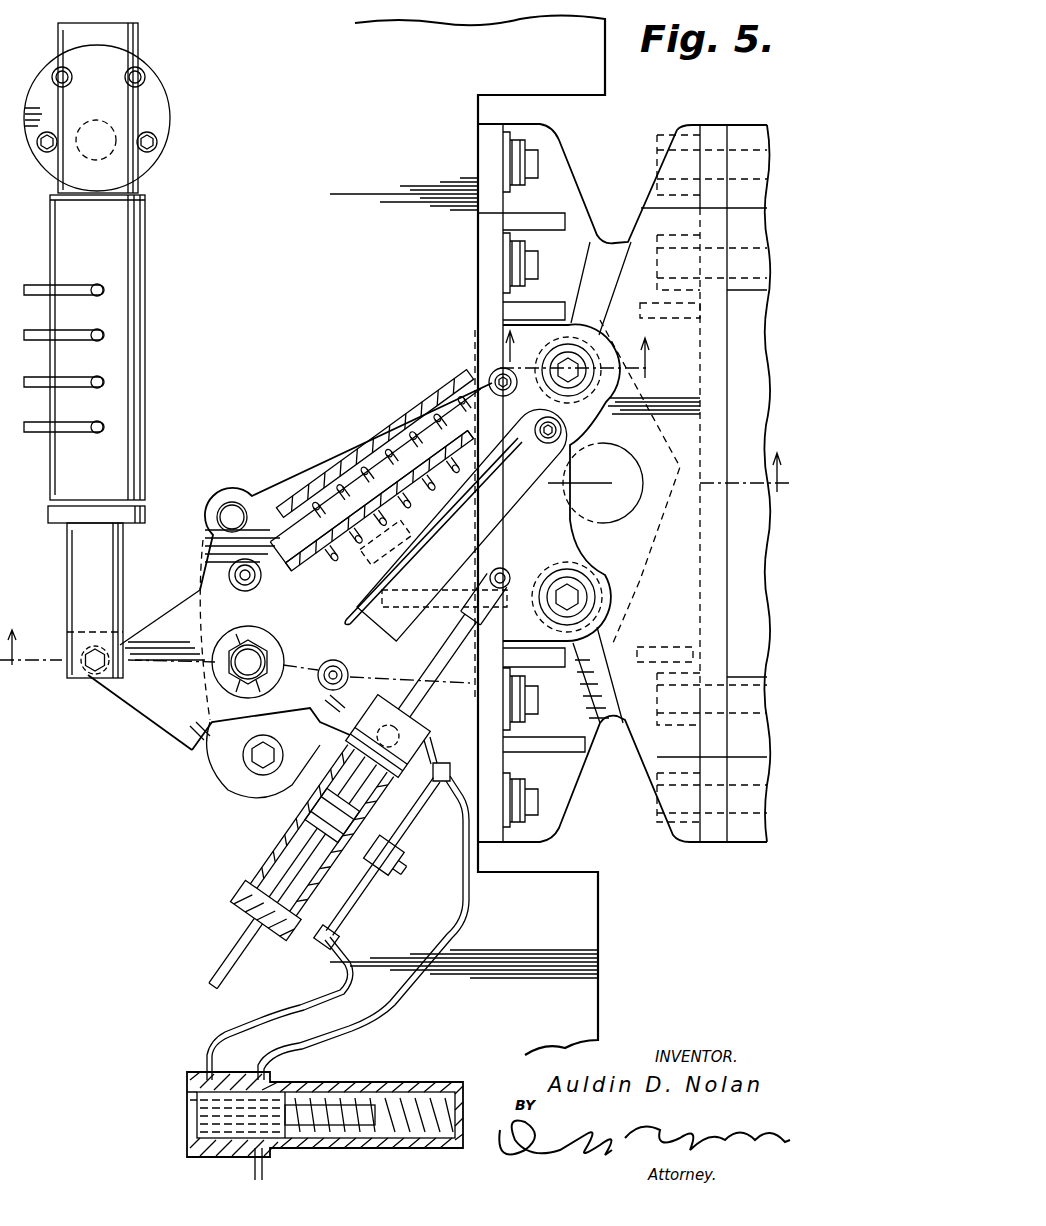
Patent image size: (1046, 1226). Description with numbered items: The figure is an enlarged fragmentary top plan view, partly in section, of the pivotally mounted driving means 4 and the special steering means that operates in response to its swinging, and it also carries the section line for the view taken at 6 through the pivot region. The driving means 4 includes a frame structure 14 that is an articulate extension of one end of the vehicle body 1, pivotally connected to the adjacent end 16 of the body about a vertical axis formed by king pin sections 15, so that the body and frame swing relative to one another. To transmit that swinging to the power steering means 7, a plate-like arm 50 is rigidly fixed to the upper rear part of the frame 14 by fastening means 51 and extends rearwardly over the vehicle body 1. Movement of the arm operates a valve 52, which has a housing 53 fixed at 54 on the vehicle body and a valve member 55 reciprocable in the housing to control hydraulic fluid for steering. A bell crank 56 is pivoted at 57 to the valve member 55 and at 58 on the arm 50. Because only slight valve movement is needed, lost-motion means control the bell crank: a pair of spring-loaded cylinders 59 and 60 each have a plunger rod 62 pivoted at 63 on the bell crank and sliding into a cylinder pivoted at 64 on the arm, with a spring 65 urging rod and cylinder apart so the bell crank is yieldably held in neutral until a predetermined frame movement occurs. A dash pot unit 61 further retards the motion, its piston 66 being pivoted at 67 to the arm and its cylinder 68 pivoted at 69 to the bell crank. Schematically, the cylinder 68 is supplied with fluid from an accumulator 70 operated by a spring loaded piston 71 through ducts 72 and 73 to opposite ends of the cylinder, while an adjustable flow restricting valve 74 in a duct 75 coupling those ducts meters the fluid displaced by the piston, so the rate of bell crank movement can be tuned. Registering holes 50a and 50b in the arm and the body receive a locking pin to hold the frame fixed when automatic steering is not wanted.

The vehicle body 1 is at (612, 960).
The driving means 4 is at (782, 114).
The frame structure 14 is at (716, 112).
The king pin sections 15 is at (612, 512).
The adjacent end of the vehicle body 16 is at (594, 184).
The plate-like arm 50 is at (335, 590).
The registering hole 50a is at (238, 508).
The registering hole 50b is at (226, 506).
The fastening means 51 is at (572, 362).
The valve 52 is at (116, 373).
The housing 53 is at (148, 358).
The fixing point of housing 54 is at (146, 120).
The valve member 55 is at (80, 572).
The bell crank 56 is at (155, 708).
The pivot 57 is at (90, 672).
The pivot 58 is at (250, 630).
The spring-loaded cylinder 59 is at (402, 427).
The spring-loaded cylinder 60 is at (388, 573).
The dash pot unit 61 is at (260, 849).
The plunger rod 62 is at (362, 460).
The pivot 63 is at (252, 582).
The pivot 64 is at (492, 378).
The spring 65 is at (373, 463).
The piston 66 is at (318, 812).
The pivot 67 is at (508, 588).
The cylinder 68 is at (360, 812).
The pivot 69 is at (410, 722).
The accumulator 70 is at (325, 1108).
The spring loaded piston 71 is at (350, 1100).
The conduit or duct 72 is at (215, 1025).
The conduit or duct 73 is at (438, 946).
The adjustable flow restricting valve 74 is at (395, 858).
The conduit or duct 75 is at (350, 917).
The section line 6- 6 is at (395, 577).
The power steering means 7 is at (573, 354).